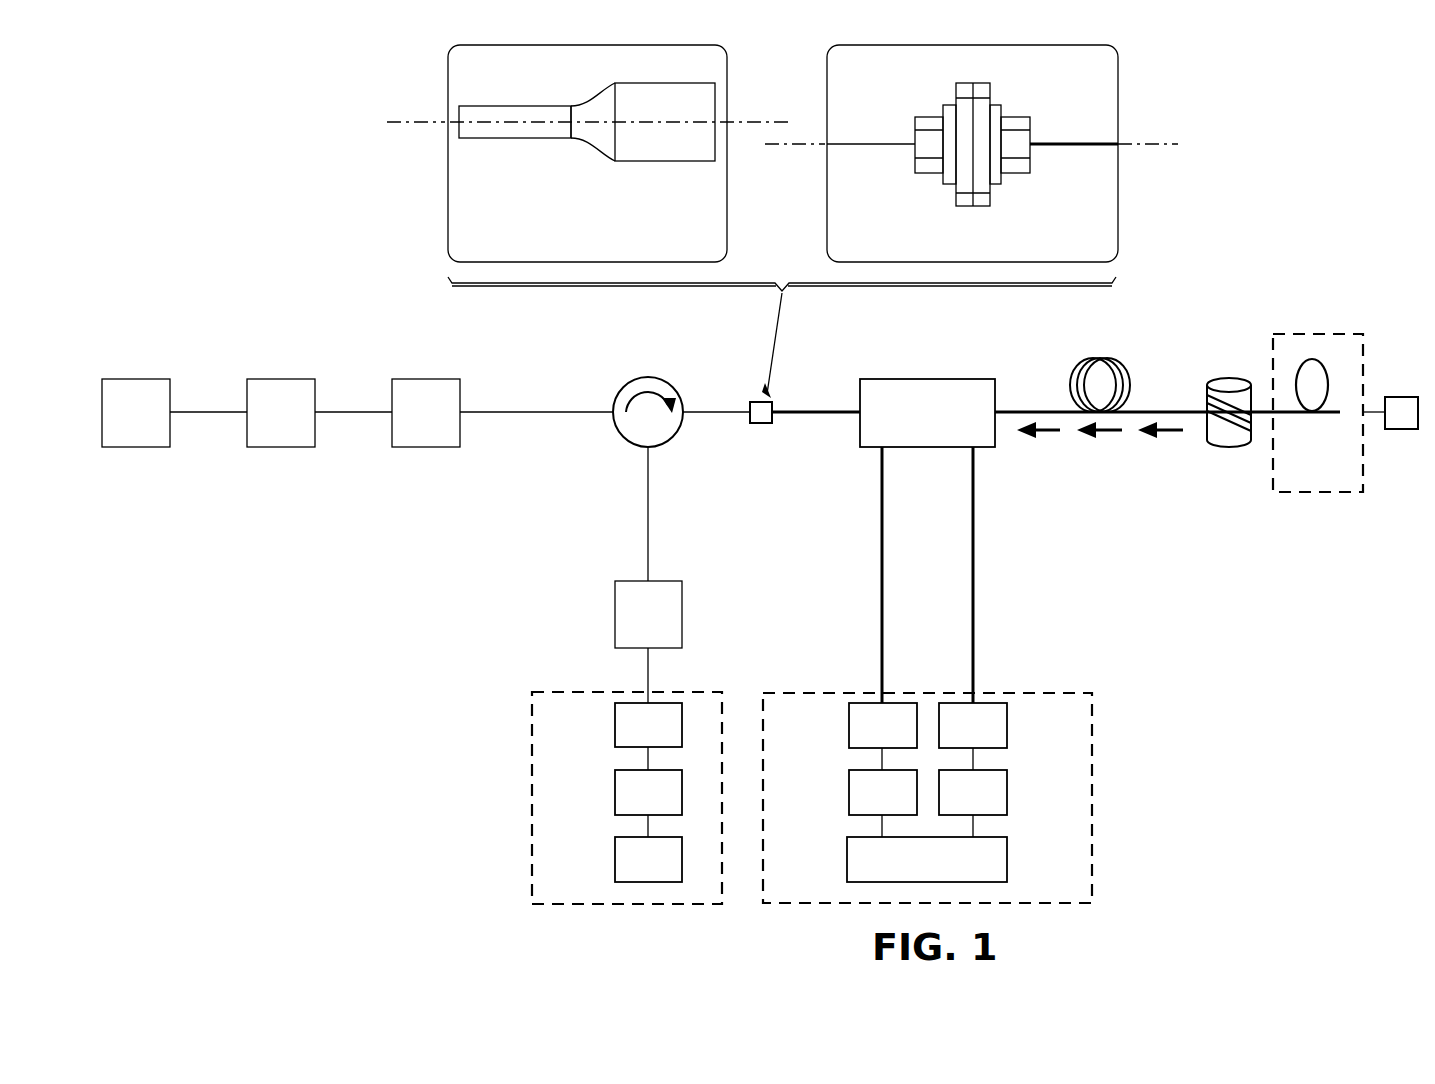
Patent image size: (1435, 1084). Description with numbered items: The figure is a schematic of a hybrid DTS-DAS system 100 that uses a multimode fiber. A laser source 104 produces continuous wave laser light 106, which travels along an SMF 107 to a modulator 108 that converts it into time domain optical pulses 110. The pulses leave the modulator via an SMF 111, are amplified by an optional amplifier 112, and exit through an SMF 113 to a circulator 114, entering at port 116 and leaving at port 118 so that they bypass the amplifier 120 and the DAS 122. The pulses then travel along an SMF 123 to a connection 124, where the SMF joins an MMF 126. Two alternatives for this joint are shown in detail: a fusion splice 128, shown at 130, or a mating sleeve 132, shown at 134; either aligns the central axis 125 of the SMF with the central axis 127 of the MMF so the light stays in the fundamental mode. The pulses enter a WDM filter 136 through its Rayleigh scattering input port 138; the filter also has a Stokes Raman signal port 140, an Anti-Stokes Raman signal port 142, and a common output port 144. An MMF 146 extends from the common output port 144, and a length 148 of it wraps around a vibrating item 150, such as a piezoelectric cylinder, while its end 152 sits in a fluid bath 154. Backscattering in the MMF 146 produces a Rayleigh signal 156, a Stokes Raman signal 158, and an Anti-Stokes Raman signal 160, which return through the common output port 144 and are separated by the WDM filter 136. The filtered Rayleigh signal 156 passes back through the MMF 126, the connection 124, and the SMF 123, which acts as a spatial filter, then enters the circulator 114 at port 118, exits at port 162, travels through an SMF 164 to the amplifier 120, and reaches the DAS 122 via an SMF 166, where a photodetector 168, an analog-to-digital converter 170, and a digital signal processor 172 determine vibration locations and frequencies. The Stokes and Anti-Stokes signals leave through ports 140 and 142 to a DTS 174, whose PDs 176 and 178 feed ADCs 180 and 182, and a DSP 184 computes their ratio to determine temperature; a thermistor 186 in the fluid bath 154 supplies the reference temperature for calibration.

The hybrid DTS-DAS system 100 is at (303, 106).
The laser source 104 is at (136, 413).
The continuous wave laser light 106 is at (205, 414).
The SMF 107 is at (175, 411).
The modulator 108 is at (281, 413).
The optical pulses 110 is at (353, 414).
The SMF 111 is at (320, 411).
The amplifier 112 is at (426, 413).
The SMF 113 is at (465, 411).
The circulator 114 is at (655, 378).
The port 116 is at (613, 410).
The port 118 is at (684, 411).
The amplifier 120 is at (648, 614).
The DAS 122 is at (526, 808).
The SMF 123 is at (512, 140).
The connection 124 is at (760, 430).
The central axis 125 is at (425, 124).
The MMF 126 is at (665, 152).
The central axis 127 is at (742, 120).
The fusion splice 128 is at (592, 141).
The fusion splice connection view 130 is at (444, 87).
The mating sleeve 132 is at (982, 208).
The mating sleeve connection view 134 is at (1124, 89).
The WDM filter 136 is at (927, 413).
The Rayleigh scattering input port 138 is at (858, 410).
The Stokes Raman signal port 140 is at (868, 449).
The Anti-Stokes Raman signal port 142 is at (972, 449).
The common output port 144 is at (996, 406).
The MMF 146 is at (1060, 410).
The length 148 is at (1225, 425).
The item 150 is at (1205, 393).
The end 152 is at (1315, 414).
The fluid bath 154 is at (1330, 494).
The Rayleigh signal 156 is at (1052, 437).
The Stokes Raman signal 158 is at (1112, 437).
The Anti-Stokes Raman signal 160 is at (1172, 437).
The port 162 is at (641, 447).
The SMF 164 is at (647, 515).
The SMF 166 is at (647, 660).
The photodetector 168 is at (614, 723).
The analog-to-digital converter 170 is at (614, 790).
The digital signal processor 172 is at (614, 858).
The DTS 174 is at (1102, 841).
The PD 176 is at (848, 723).
The PD 178 is at (1008, 723).
The ADC 180 is at (848, 790).
The ADC 182 is at (1008, 790).
The DSP 184 is at (1008, 858).
The thermistor 186 is at (1402, 396).